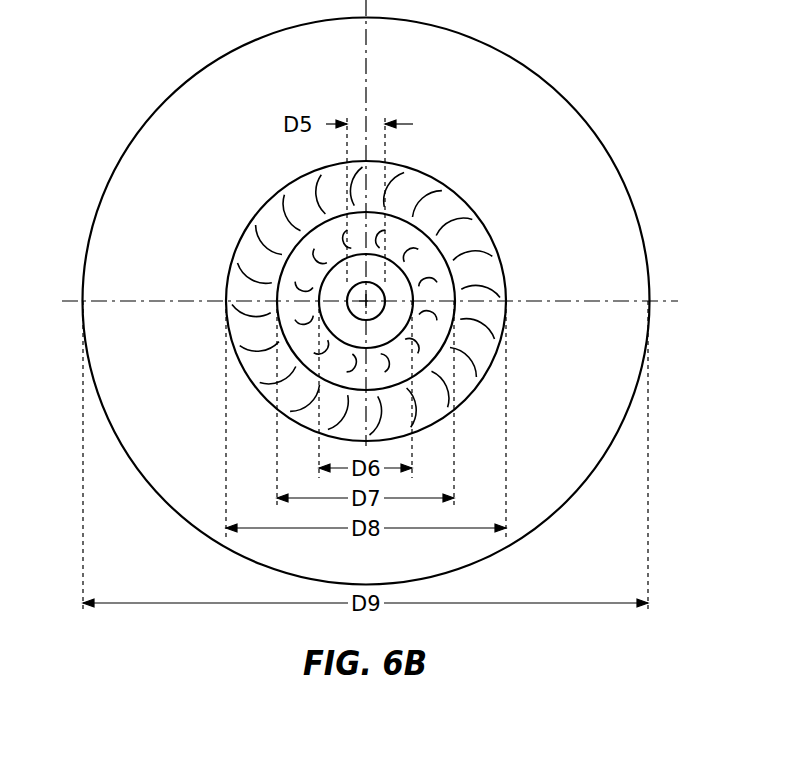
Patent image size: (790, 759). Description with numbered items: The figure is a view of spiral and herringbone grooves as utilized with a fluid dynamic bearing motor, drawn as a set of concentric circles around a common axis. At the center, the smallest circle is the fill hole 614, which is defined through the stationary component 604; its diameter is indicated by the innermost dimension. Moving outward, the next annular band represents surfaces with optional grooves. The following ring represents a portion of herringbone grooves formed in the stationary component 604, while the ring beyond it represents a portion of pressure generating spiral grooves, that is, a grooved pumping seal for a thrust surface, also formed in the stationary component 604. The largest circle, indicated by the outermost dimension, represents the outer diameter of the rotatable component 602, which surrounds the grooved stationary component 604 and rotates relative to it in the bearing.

The rotatable component 602 is at (577, 137).
The stationary component 604 is at (447, 207).
The fill hole 614 is at (376, 292).